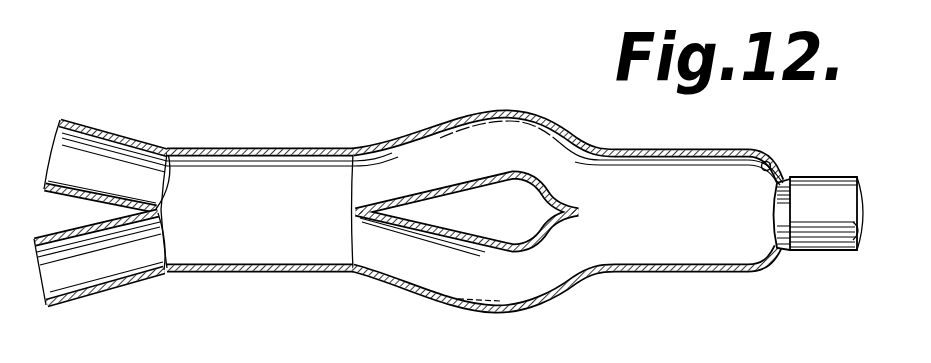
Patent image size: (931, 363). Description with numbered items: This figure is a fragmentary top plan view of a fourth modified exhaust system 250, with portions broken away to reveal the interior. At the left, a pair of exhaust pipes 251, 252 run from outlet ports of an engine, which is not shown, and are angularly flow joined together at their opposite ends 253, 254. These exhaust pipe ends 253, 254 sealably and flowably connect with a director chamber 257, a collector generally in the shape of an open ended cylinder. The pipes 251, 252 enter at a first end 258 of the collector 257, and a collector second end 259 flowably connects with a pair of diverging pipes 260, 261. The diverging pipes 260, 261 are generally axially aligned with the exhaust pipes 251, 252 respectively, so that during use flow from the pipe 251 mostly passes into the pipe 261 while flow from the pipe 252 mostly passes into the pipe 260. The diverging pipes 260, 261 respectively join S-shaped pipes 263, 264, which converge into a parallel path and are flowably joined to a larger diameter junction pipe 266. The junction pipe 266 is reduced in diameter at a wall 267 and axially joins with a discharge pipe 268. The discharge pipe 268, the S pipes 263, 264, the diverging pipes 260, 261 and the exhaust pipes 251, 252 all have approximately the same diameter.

The exhaust system 250 is at (290, 293).
The exhaust pipe 251 is at (133, 141).
The exhaust pipe 252 is at (84, 292).
The exhaust pipe end 253 is at (170, 148).
The exhaust pipe end 254 is at (170, 273).
The director chamber 257 is at (291, 126).
The first end 258 is at (172, 166).
The collector second end 259 is at (349, 168).
The diverging pipe 260 is at (473, 118).
The diverging pipe 261 is at (452, 302).
The S-shaped pipe 263 is at (563, 131).
The S-shaped pipe 264 is at (568, 291).
The junction pipe 266 is at (695, 124).
The wall 267 is at (756, 161).
The discharge pipe 268 is at (838, 252).